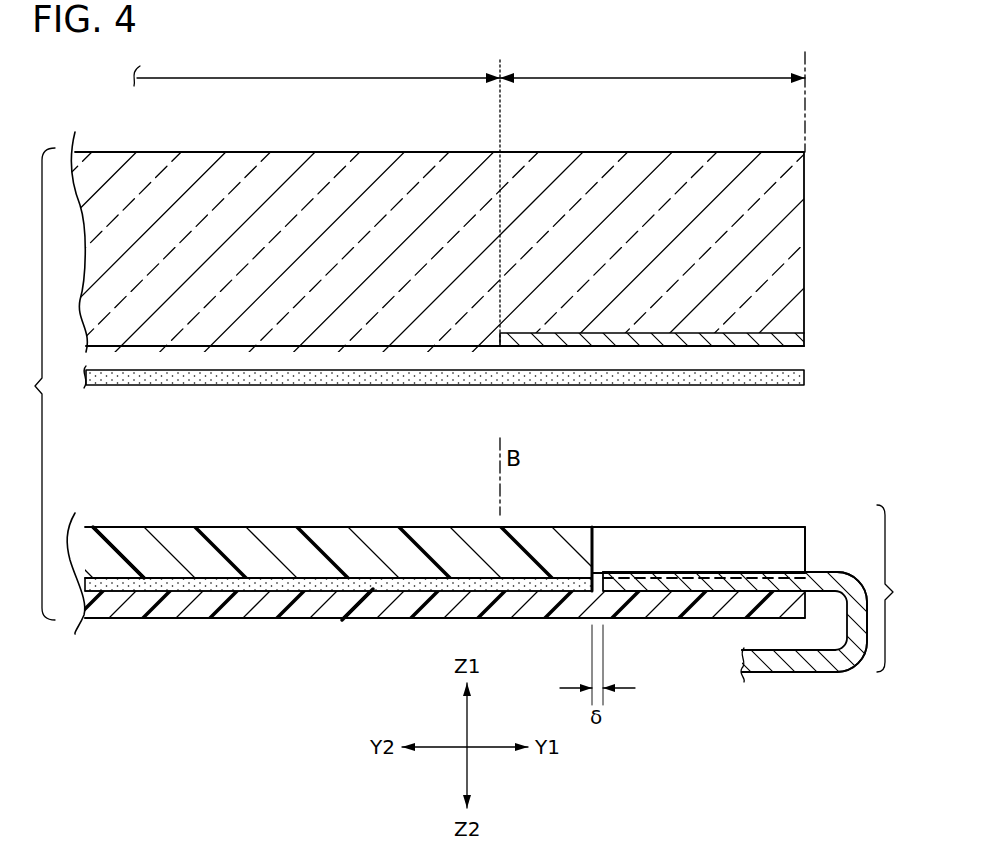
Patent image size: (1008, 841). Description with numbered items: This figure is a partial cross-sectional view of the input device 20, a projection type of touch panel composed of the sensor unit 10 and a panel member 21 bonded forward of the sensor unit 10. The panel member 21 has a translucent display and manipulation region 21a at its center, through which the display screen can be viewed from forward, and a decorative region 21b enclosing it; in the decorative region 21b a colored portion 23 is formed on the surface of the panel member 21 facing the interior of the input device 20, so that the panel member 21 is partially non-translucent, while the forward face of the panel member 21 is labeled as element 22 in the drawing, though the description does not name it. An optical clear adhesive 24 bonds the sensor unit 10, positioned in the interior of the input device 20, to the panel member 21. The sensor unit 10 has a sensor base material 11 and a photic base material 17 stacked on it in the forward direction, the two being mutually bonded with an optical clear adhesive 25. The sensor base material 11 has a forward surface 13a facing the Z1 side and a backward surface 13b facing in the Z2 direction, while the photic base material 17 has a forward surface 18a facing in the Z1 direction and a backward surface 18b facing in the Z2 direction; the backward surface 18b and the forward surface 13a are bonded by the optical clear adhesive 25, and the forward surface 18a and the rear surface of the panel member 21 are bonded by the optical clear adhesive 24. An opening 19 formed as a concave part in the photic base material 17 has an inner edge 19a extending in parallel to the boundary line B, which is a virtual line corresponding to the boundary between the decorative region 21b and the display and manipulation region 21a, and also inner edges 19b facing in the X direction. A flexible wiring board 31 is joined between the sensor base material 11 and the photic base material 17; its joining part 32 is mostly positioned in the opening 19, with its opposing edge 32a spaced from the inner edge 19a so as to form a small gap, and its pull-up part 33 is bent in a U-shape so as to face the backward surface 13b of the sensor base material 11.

The sensor unit 10 is at (901, 588).
The sensor base material 11 is at (398, 605).
The forward surface 13a is at (385, 587).
The backward surface 13b is at (268, 618).
The photic base material 17 is at (102, 540).
The forward surface 18a is at (256, 528).
The backward surface 18b is at (196, 595).
The opening 19 is at (722, 540).
The inner edge 19a is at (596, 524).
The inner edge 19b is at (808, 536).
The input device 20 is at (31, 384).
The panel member 21 is at (808, 234).
The display and manipulation region 21a is at (317, 67).
The decorative region 21b is at (652, 65).
The light exit surface 22 is at (200, 152).
The colored portion 23 is at (792, 347).
The optical clear adhesive 24 is at (205, 386).
The optical clear adhesive 25 is at (112, 592).
The flexible wiring board 31 is at (860, 668).
The joining part 32 is at (707, 590).
The opposing edge 32a is at (598, 578).
The pull-up part 33 is at (770, 655).